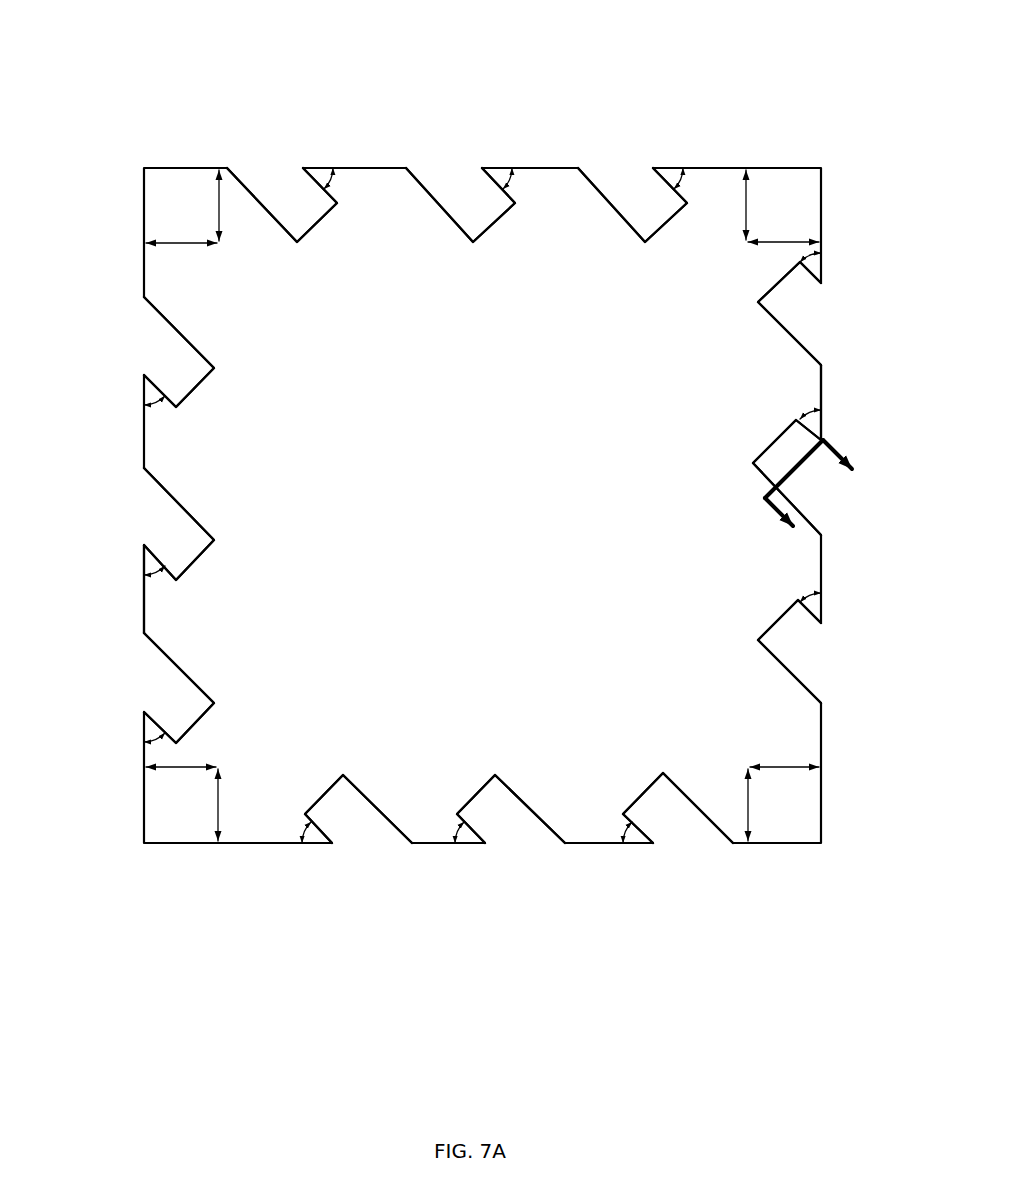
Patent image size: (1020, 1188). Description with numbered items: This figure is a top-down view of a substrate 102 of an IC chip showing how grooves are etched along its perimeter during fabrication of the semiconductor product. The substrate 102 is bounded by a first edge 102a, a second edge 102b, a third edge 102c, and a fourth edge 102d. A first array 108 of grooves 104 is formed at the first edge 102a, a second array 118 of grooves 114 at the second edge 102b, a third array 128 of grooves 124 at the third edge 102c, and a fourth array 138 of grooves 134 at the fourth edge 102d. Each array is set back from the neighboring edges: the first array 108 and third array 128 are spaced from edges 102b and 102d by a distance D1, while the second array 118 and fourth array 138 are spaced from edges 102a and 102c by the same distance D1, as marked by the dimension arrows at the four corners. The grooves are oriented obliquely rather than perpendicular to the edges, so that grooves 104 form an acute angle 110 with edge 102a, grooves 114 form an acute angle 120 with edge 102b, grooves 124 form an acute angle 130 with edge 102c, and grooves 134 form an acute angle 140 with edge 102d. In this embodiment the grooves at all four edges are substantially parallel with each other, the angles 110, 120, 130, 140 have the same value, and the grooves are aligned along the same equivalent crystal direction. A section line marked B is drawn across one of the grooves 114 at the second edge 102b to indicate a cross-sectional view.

The substrate 102 is at (416, 509).
The first edge 102a is at (375, 165).
The second edge 102b is at (825, 387).
The third edge 102c is at (593, 847).
The fourth edge 102d is at (141, 602).
The grooves 104 is at (275, 188).
The first array 108 is at (293, 93).
The acute angle 110 is at (337, 182).
The grooves 114 is at (788, 312).
The second array 118 is at (738, 532).
The acute angle 120 is at (814, 257).
The grooves 124 is at (350, 832).
The third array 128 is at (687, 898).
The acute angle 130 is at (303, 834).
The grooves 134 is at (158, 345).
The fourth array 138 is at (82, 443).
The acute angle 140 is at (154, 404).
The distance D1 is at (217, 205).
The section line B- B is at (822, 501).